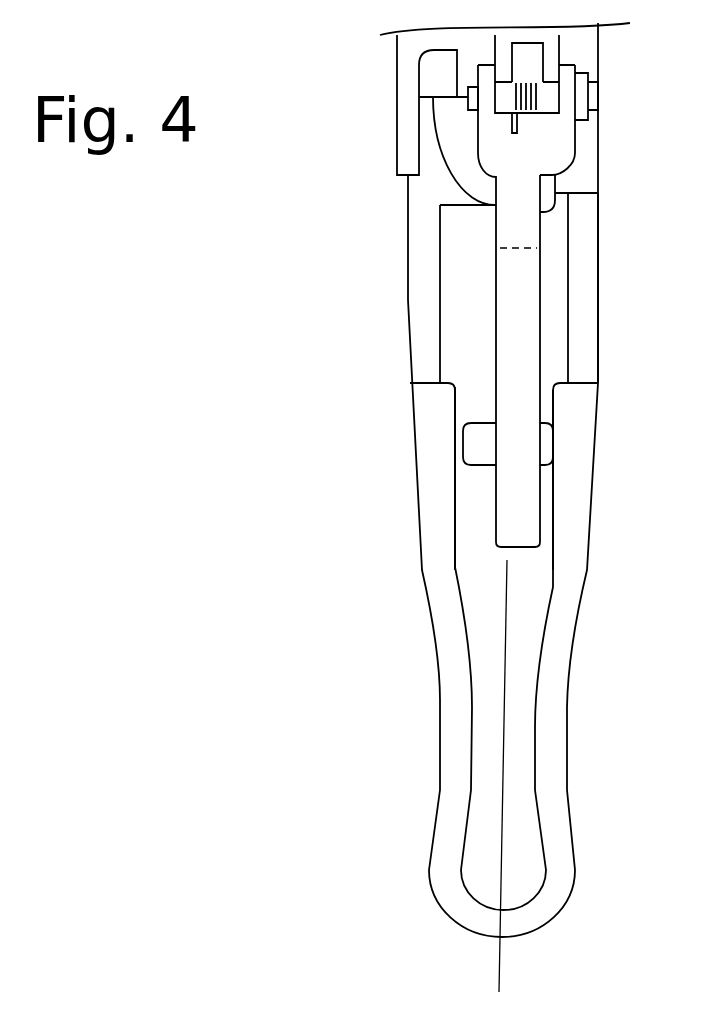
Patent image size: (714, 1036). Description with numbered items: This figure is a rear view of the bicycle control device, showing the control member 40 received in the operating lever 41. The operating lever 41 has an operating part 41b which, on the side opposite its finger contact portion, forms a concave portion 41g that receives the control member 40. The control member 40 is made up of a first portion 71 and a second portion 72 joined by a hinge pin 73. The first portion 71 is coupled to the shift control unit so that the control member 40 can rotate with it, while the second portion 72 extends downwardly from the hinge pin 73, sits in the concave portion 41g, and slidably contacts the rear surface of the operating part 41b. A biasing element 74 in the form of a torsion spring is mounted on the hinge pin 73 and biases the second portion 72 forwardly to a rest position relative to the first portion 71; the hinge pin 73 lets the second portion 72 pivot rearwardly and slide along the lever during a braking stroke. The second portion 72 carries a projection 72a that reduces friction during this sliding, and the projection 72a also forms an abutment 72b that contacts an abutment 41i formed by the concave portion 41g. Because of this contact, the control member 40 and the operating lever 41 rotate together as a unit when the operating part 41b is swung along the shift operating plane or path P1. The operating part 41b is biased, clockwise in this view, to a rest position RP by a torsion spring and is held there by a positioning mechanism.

The control member 40 is at (523, 302).
The operating lever 41 is at (602, 343).
The operating part 41b is at (600, 208).
The concave portion 41g is at (473, 492).
The abutment 41i is at (457, 413).
The first portion 71 is at (552, 48).
The second portion 72 is at (528, 233).
The projection 72a is at (547, 428).
The abutment 72b is at (460, 455).
The hinge pin 73 is at (588, 92).
The biasing element 74 is at (518, 125).
The shift operating plane or path P1 is at (398, 820).
The rest position RP is at (524, 969).